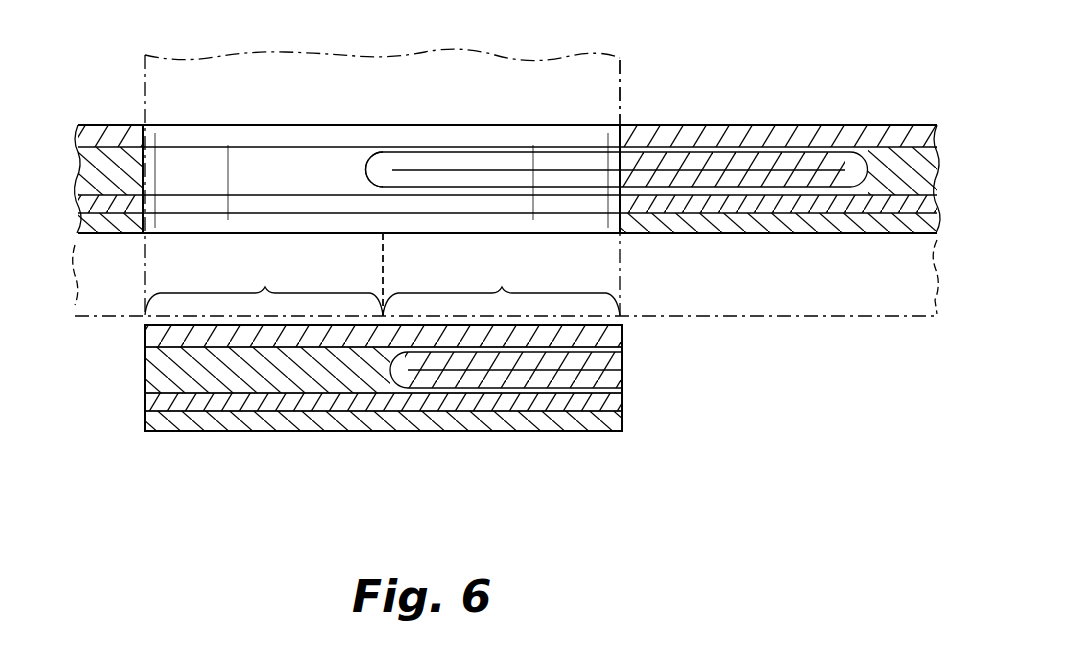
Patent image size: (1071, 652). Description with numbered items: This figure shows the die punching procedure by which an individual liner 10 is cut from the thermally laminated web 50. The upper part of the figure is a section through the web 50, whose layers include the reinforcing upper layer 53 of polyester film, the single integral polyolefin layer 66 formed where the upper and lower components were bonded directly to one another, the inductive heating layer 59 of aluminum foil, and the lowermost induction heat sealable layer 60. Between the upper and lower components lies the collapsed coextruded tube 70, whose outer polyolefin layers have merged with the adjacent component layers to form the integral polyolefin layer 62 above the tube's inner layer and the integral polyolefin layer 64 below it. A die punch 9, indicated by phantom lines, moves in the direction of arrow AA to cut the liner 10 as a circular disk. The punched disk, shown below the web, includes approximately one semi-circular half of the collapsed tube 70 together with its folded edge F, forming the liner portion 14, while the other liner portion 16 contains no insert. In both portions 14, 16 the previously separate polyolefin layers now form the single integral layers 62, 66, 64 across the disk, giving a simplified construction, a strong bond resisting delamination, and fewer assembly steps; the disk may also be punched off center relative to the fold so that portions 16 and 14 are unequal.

The laminated web 50 is at (62, 158).
The liner 10 is at (98, 382).
The upper layer 53 is at (145, 337).
The integral polyolefin layer 66 is at (165, 372).
The inductive heating layer 59 is at (145, 400).
The induction heat sealable layer 60 is at (150, 418).
The integral polyolefin layer 62 is at (622, 350).
The integral polyolefin layer 64 is at (622, 386).
The collapsed coextruded tube 70 is at (575, 152).
The die punch 9 is at (620, 78).
The liner portion 16 is at (264, 290).
The liner portion 14 is at (501, 290).
The folded edge F is at (383, 158).
The arrow AA is at (383, 258).